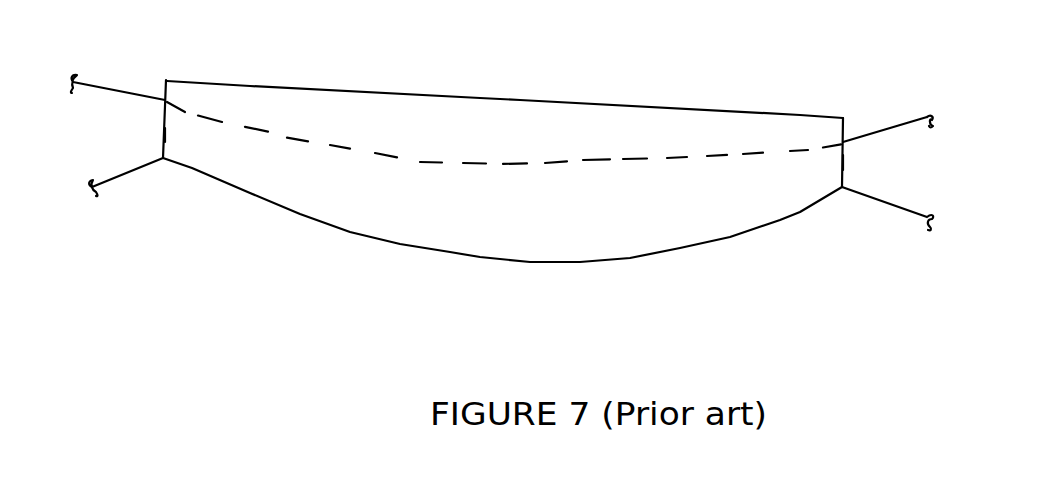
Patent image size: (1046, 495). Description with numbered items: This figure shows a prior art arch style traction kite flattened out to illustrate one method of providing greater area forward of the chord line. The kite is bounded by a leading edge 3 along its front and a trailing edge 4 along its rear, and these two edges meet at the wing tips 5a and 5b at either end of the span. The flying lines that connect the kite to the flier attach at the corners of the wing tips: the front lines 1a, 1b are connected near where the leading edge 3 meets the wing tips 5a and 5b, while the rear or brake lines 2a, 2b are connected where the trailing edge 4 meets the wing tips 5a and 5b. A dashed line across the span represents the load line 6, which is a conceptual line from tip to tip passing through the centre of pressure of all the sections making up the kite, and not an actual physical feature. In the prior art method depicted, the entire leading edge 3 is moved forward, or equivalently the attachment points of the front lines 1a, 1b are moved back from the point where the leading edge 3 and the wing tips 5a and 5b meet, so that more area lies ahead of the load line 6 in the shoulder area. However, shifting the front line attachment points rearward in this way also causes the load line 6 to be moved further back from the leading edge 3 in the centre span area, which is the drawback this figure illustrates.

The front line 1a is at (110, 83).
The front line 1b is at (878, 128).
The rear or brake line 2a is at (118, 180).
The rear or brake line 2b is at (880, 202).
The leading edge 3 is at (518, 97).
The trailing edge 4 is at (502, 258).
The wing tip 5a is at (160, 135).
The wing tip 5b is at (843, 162).
The load line 6 is at (546, 168).